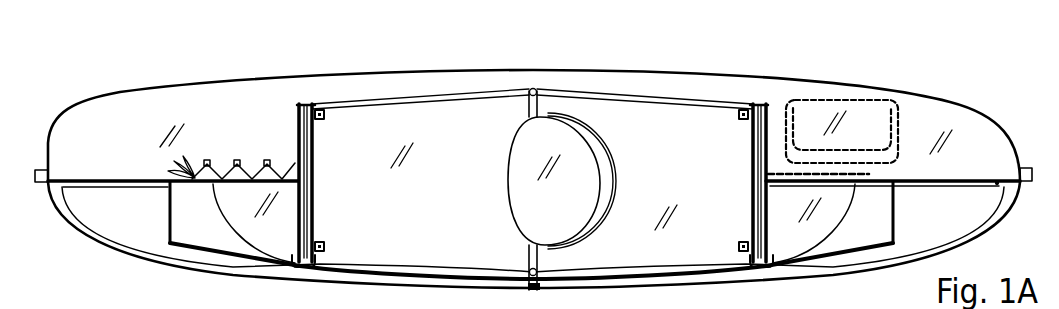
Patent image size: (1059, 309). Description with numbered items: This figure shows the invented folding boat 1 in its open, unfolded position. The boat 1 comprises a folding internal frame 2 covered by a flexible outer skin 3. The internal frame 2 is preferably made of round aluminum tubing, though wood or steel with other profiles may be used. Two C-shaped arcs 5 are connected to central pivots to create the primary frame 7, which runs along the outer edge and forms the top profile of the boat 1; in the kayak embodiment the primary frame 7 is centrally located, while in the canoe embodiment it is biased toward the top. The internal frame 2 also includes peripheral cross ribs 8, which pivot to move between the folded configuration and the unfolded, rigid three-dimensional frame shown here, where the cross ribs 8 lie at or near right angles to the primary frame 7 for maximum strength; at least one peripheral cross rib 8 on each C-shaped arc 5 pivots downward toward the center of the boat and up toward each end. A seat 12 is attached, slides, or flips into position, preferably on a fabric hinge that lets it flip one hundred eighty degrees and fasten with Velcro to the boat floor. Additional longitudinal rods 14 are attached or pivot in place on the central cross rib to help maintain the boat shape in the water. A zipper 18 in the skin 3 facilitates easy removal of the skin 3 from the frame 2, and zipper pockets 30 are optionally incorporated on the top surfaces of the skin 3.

The boat 1 is at (59, 115).
The folding internal frame 2 is at (516, 245).
The flexible outer skin 3 is at (138, 117).
The C-shaped arc 5 is at (537, 291).
The primary frame 7 is at (530, 288).
The peripheral cross rib 8 is at (508, 199).
The seat 12 is at (565, 135).
The longitudinal rod 14 is at (533, 246).
The zipper 18 is at (828, 172).
The zipper pocket 30 is at (883, 145).